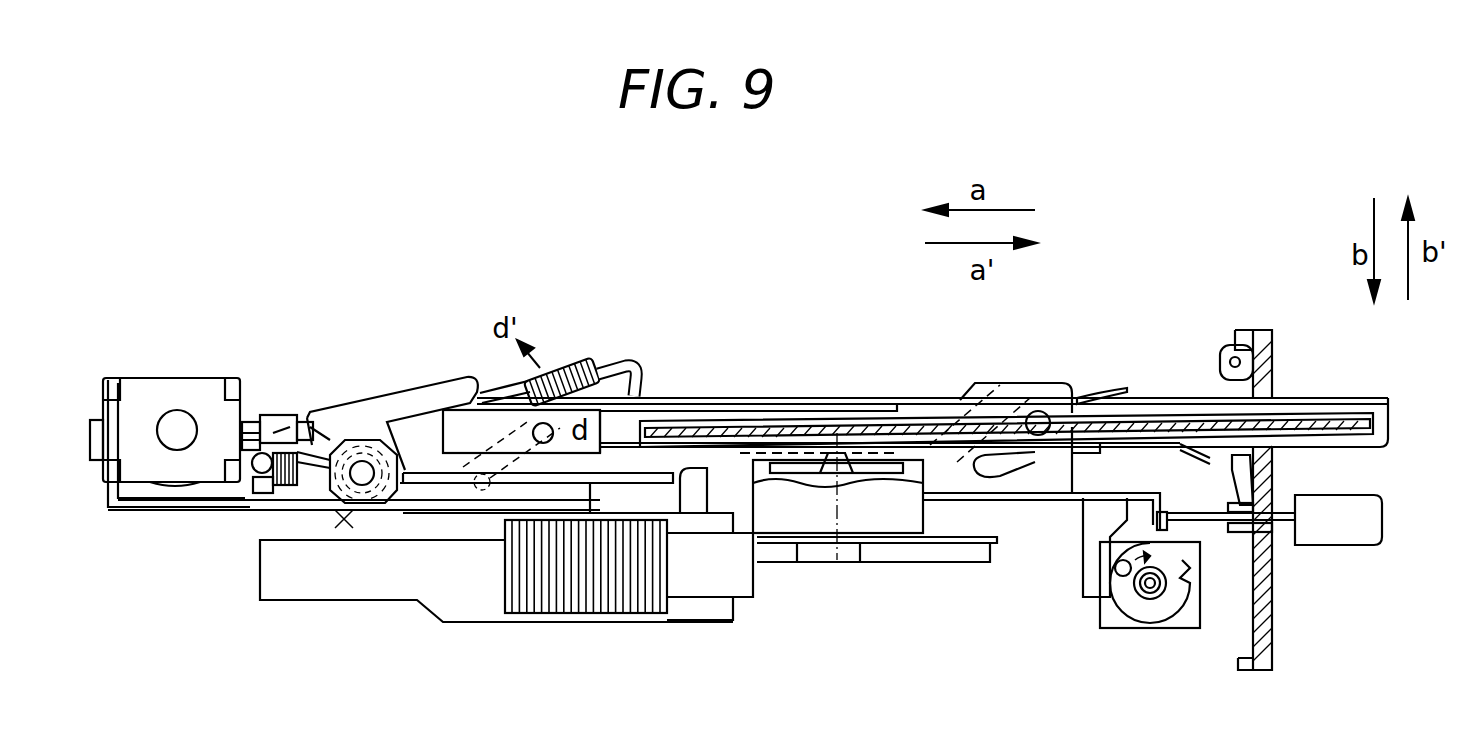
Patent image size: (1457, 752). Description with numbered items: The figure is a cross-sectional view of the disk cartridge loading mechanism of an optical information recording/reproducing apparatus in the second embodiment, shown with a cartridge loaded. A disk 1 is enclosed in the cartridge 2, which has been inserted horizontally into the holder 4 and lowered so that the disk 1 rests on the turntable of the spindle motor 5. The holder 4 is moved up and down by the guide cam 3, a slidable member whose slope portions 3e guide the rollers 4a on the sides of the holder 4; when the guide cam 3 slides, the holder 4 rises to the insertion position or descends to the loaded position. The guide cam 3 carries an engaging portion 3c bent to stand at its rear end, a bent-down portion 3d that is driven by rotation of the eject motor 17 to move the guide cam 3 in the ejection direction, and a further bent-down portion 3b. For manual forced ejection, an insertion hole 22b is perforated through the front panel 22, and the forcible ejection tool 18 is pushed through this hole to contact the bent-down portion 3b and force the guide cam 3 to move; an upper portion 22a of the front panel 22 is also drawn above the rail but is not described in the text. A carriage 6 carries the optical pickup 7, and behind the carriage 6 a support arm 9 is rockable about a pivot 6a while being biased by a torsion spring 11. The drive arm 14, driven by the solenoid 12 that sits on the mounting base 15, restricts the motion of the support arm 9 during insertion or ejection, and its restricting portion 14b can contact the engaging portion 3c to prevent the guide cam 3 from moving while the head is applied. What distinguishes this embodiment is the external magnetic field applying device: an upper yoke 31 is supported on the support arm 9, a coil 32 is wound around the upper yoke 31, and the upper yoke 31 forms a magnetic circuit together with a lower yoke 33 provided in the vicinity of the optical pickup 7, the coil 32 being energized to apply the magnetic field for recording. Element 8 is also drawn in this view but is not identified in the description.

The disk 1 is at (1143, 420).
The cartridge 2 is at (1175, 405).
The guide cam 3 is at (1048, 505).
The bent-down portion 3b is at (1178, 585).
The engaging portion 3c is at (248, 505).
The bent-down portion 3d is at (1093, 528).
The slope portions 3e is at (1040, 425).
The holder 4 is at (932, 395).
The rollers 4a is at (1040, 420).
The spindle motor 5 is at (858, 548).
The carriage 6 is at (720, 600).
The pivot 6a is at (362, 473).
The optical pickup 7 is at (688, 487).
The motor coil 8 is at (633, 598).
The support arm 9 is at (347, 417).
The torsion spring 11 is at (338, 515).
The solenoid 12 is at (163, 398).
The drive arm 14 is at (277, 395).
The restricting portion 14b is at (283, 478).
The mounting base 15 is at (108, 510).
The eject motor 17 is at (1118, 630).
The forcible ejection tool 18 is at (1357, 520).
The front panel 22 is at (1275, 628).
The upper fixing portion 22a is at (1273, 400).
The insertion hole 22b is at (1272, 528).
The upper yoke 31 is at (633, 370).
The coil 32 is at (563, 372).
The lower yoke 33 is at (548, 475).